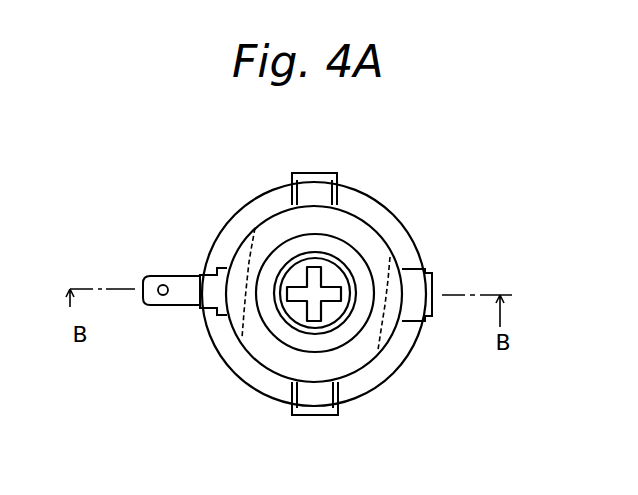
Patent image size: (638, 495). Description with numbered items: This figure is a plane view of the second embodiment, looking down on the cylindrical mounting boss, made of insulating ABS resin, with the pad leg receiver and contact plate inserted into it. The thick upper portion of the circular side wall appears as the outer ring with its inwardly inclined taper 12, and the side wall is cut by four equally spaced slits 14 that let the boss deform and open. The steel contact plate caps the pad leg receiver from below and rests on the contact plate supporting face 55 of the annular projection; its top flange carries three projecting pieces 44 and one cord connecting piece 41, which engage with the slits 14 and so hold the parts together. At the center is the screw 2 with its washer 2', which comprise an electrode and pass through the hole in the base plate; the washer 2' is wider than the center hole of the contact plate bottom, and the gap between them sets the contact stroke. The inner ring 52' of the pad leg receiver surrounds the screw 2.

The screw 2 is at (339, 247).
The washer 2' is at (364, 265).
The taper 12 is at (397, 356).
The slits 14 is at (207, 309).
The cord connecting piece 41 is at (177, 288).
The projecting pieces 44 is at (322, 180).
The ring 52' is at (327, 330).
The contact plate supporting face 55 is at (360, 305).